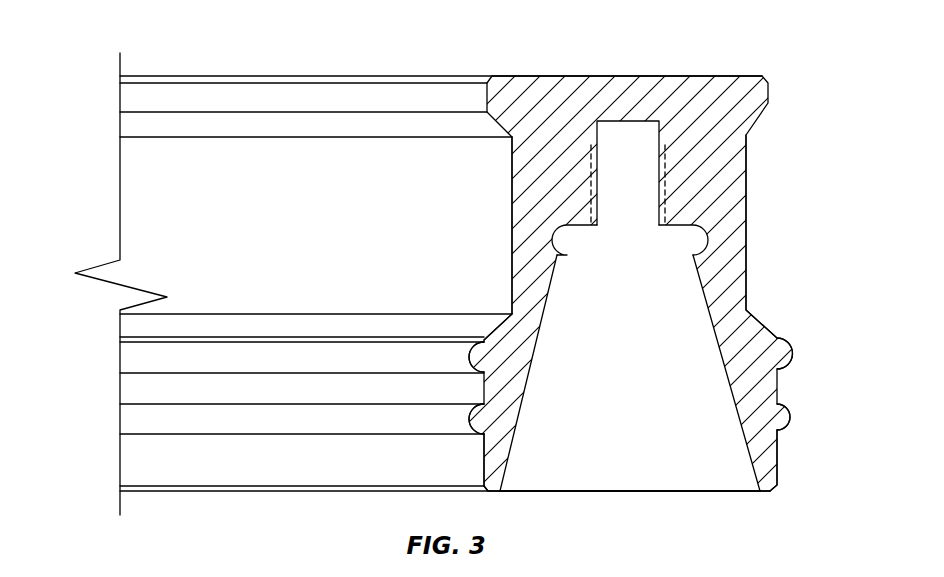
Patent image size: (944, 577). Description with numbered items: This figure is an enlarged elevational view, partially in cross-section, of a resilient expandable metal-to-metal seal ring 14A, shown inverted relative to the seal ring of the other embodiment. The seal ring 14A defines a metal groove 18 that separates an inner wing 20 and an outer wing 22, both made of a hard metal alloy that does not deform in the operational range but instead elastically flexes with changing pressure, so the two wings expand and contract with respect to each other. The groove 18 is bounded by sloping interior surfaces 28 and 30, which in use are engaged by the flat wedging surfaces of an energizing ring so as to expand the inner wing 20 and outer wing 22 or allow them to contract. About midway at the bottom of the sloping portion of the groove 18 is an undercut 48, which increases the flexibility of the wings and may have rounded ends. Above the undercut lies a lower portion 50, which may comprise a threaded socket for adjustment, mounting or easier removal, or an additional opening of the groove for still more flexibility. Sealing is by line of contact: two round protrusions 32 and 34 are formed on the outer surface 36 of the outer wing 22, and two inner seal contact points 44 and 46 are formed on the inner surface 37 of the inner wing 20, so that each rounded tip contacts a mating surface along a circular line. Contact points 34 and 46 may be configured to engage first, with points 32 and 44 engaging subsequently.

The seal ring 14A is at (764, 36).
The lower portion 50 is at (627, 148).
The undercut 48 is at (685, 240).
The interior surface 30 is at (728, 372).
The interior surface 28 is at (532, 372).
The metal groove 18 is at (629, 477).
The outer wing 22 is at (745, 346).
The round protrusion 32 is at (790, 354).
The round protrusion 34 is at (790, 417).
The outer surface 36 is at (777, 462).
The inner wing 20 is at (517, 338).
The inner seal contact point 44 is at (469, 358).
The inner seal contact point 46 is at (471, 414).
The inner surface 37 is at (484, 453).